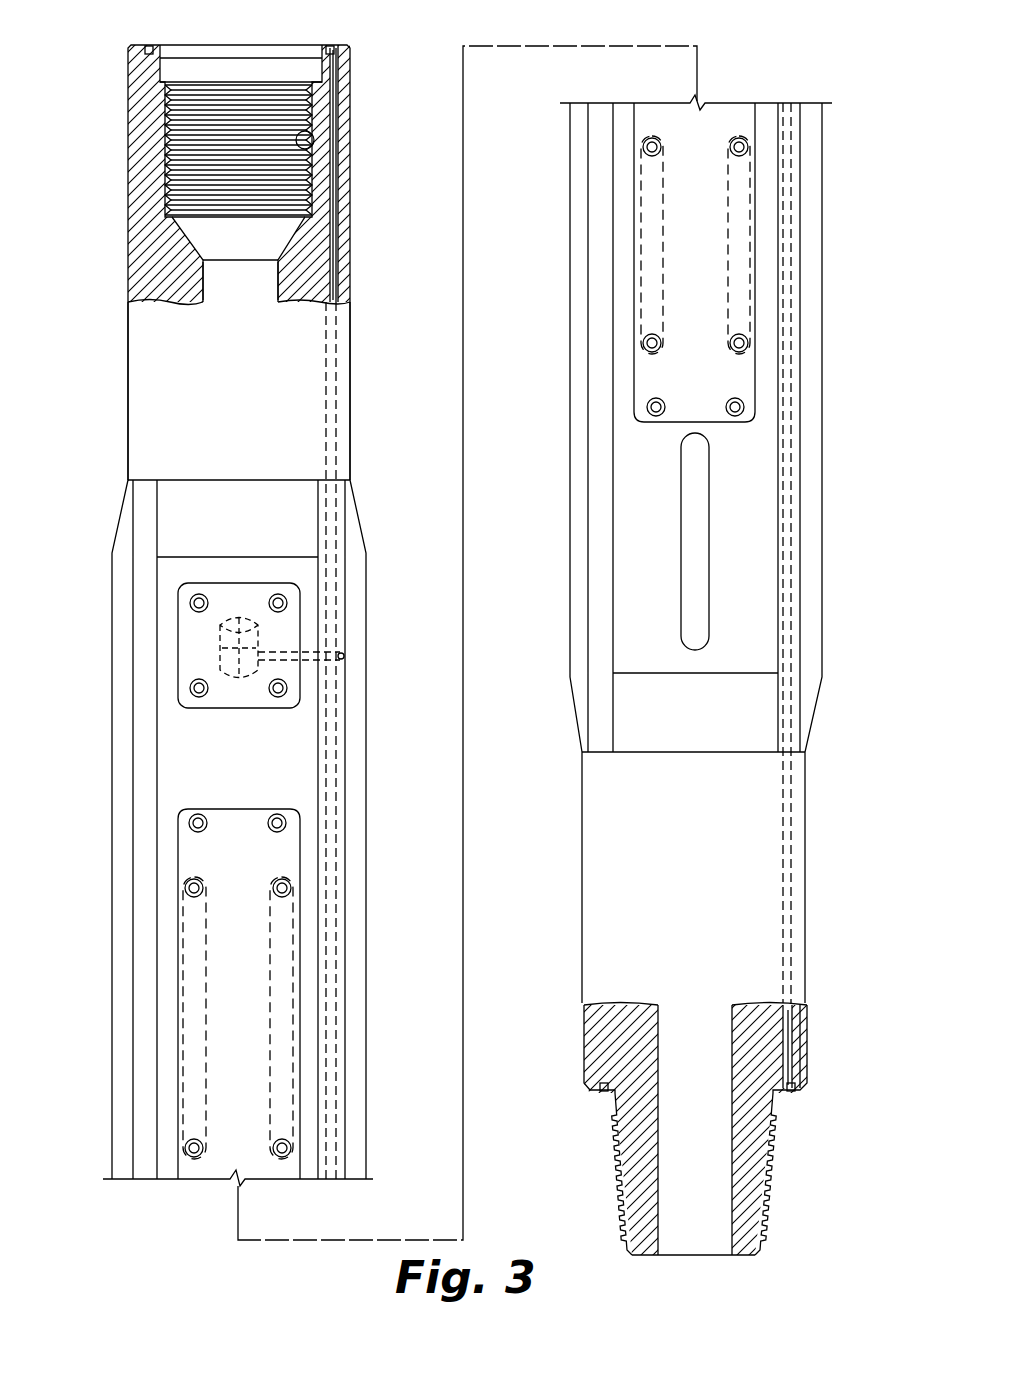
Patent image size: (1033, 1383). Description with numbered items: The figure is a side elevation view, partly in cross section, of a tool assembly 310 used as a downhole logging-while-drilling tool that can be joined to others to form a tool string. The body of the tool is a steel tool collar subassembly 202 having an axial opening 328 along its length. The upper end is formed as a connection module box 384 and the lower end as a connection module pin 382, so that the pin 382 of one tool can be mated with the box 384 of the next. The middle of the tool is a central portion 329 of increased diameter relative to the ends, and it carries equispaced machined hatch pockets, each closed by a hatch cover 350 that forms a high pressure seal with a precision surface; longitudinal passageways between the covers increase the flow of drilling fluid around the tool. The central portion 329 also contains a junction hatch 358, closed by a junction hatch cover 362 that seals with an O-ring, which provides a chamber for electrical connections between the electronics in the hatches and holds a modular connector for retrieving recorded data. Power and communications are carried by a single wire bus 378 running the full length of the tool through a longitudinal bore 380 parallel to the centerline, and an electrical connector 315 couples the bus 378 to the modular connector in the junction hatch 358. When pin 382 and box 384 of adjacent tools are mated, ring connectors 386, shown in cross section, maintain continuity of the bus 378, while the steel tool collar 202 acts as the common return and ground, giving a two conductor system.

The steel tool collar subassembly 202 is at (133, 205).
The tool assembly 310 is at (824, 411).
The electrical connector 315 is at (305, 648).
The axial opening 328 is at (210, 283).
The central portion 329 is at (348, 576).
The hatch cover 350 is at (192, 852).
The junction hatch 358 is at (235, 615).
The junction hatch cover 362 is at (183, 617).
The single wire bus 378 is at (340, 232).
The longitudinal bore 380 is at (338, 186).
The connection module pin 382 is at (762, 1200).
The connection module box 384 is at (312, 136).
The ring connector 386 is at (146, 50).